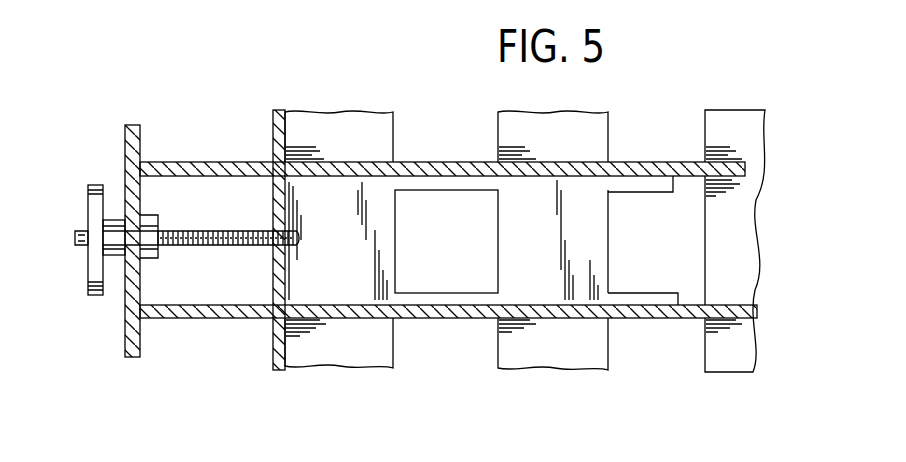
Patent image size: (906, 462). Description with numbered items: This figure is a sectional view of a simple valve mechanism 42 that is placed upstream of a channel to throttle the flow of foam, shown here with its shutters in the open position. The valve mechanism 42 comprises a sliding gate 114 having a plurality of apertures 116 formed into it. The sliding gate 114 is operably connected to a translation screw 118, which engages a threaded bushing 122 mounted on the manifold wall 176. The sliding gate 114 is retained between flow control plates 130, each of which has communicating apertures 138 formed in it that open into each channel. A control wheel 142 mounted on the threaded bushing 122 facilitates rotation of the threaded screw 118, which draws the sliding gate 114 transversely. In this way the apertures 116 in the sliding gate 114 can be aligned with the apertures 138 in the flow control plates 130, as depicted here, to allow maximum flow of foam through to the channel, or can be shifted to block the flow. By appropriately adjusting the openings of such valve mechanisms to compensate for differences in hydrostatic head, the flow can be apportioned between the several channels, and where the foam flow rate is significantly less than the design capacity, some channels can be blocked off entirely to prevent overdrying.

The valve mechanism 42 is at (230, 133).
The manifold wall 176 is at (125, 137).
The flow control plate 130 is at (385, 130).
The threaded bushing 122 is at (152, 224).
The translation screw 118 is at (208, 246).
The sliding gate 114 is at (285, 281).
The apertures 116 is at (498, 246).
The control wheel 142 is at (89, 273).
The apertures 138 is at (465, 340).